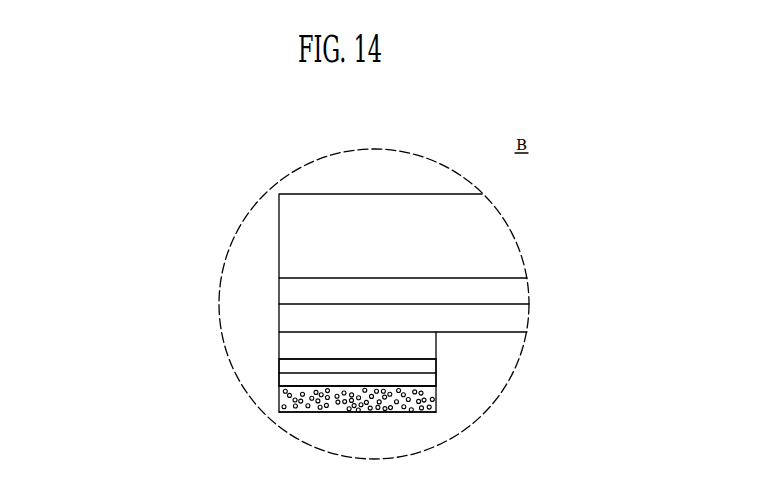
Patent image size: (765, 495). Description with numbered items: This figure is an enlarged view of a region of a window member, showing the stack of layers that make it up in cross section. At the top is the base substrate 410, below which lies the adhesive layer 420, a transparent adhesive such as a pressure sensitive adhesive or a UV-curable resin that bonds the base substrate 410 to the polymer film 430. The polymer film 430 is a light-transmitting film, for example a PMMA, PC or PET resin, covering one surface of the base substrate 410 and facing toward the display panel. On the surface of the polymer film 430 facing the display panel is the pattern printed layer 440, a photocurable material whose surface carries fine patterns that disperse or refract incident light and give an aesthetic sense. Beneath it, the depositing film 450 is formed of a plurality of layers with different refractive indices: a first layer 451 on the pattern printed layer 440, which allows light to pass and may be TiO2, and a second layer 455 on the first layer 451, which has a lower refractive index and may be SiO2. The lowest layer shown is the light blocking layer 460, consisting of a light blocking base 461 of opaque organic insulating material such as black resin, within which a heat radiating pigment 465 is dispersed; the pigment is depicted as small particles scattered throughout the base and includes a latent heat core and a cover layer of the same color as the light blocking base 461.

The base substrate 410 is at (279, 238).
The adhesive layer 420 is at (279, 292).
The polymer film 430 is at (279, 321).
The pattern printed layer 440 is at (279, 347).
The depositing film 450 is at (170, 367).
The first layer 451 is at (279, 362).
The second layer 455 is at (279, 380).
The light blocking layer 460 is at (200, 422).
The light blocking base 461 is at (279, 397).
The heat radiating pigment 465 is at (279, 412).